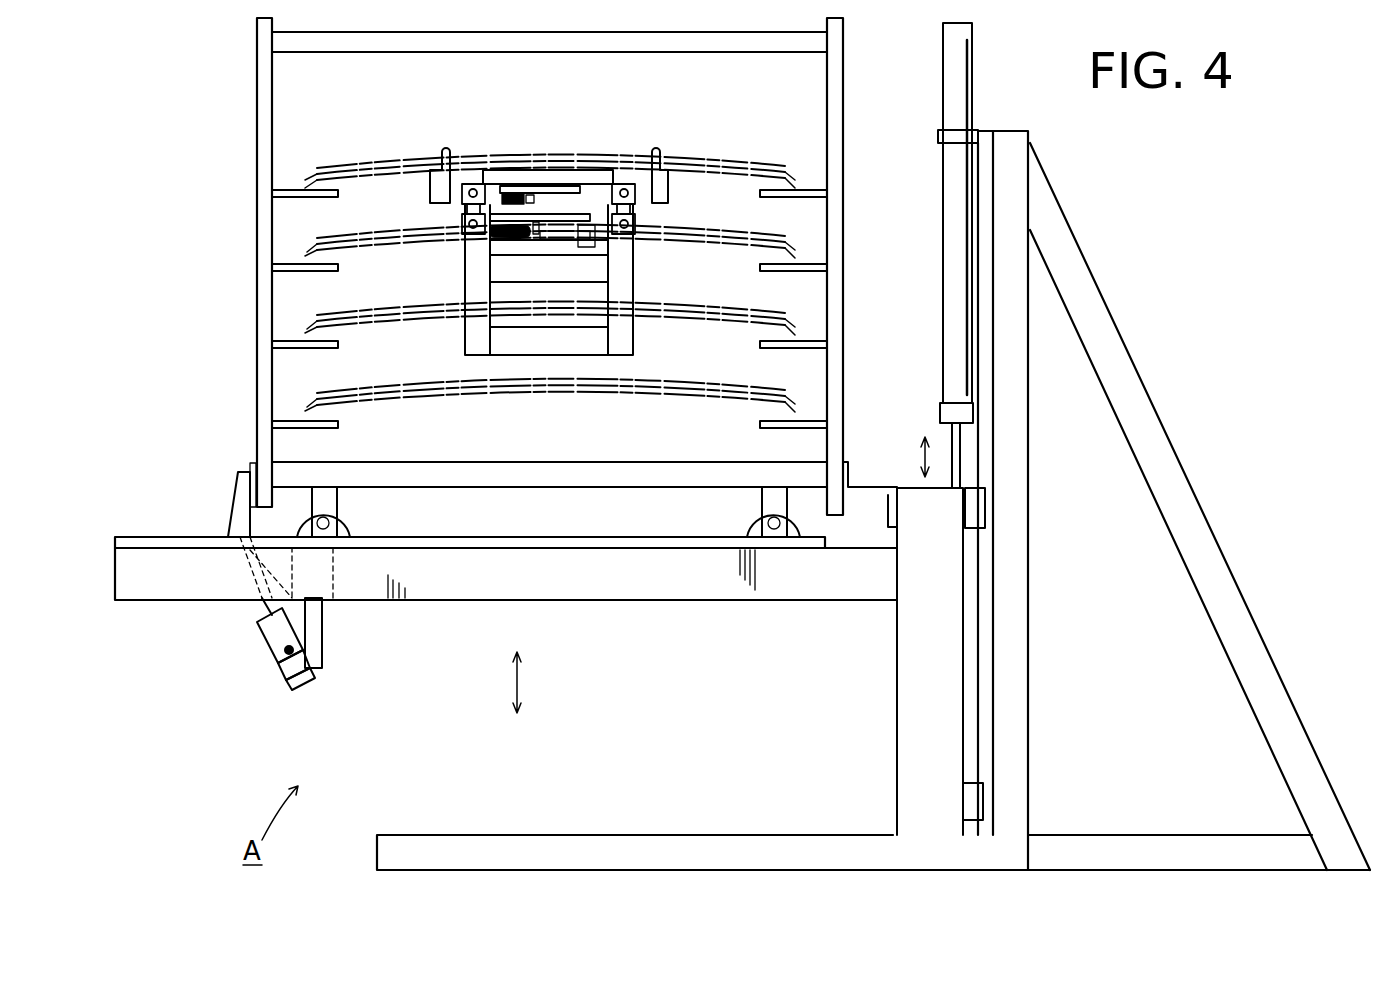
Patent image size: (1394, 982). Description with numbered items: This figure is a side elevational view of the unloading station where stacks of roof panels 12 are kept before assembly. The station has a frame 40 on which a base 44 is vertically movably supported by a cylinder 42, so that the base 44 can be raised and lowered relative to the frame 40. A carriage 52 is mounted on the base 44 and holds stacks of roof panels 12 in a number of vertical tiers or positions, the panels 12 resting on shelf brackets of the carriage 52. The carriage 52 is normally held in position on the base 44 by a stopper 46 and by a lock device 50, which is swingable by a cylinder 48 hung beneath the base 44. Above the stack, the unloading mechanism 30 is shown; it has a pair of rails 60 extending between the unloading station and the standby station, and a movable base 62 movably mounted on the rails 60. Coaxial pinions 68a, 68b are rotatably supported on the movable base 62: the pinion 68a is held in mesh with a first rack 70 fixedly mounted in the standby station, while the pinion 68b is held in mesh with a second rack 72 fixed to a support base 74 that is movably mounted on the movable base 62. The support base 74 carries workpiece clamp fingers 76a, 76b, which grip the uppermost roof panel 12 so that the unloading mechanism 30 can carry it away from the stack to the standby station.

The roof panel 12 is at (350, 160).
The unloading mechanism 30 is at (572, 178).
The frame 40 is at (1015, 740).
The cylinder 42 is at (960, 97).
The base 44 is at (612, 580).
The stopper 46 is at (872, 483).
The cylinder 48 is at (290, 665).
The lock device 50 is at (242, 498).
The carriage 52 is at (263, 98).
The rails 60 is at (468, 222).
The movable base 62 is at (612, 222).
The pinion 68a is at (518, 235).
The pinion 68b is at (512, 195).
The first rack 70 is at (490, 240).
The second rack 72 is at (548, 186).
The support base 74 is at (530, 180).
The workpiece clamp finger 76a is at (662, 188).
The workpiece clamp finger 76b is at (440, 185).